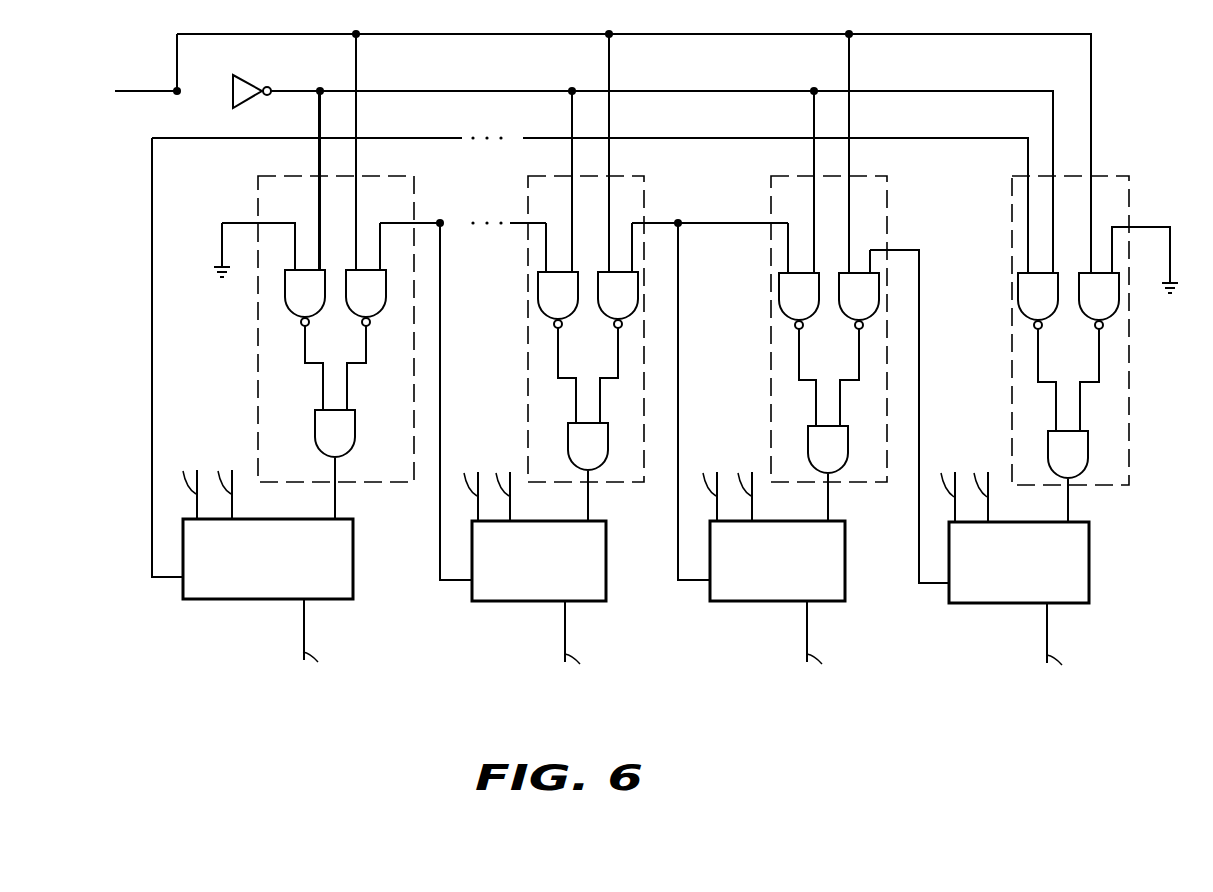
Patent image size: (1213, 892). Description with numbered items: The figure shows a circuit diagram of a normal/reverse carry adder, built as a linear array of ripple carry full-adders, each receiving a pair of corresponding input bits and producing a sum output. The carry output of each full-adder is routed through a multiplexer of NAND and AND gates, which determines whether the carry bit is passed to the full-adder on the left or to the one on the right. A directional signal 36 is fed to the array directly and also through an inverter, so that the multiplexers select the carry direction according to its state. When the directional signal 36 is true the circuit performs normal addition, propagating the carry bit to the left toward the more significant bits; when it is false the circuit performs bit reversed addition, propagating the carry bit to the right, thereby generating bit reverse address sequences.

The directional signal 36 is at (135, 90).